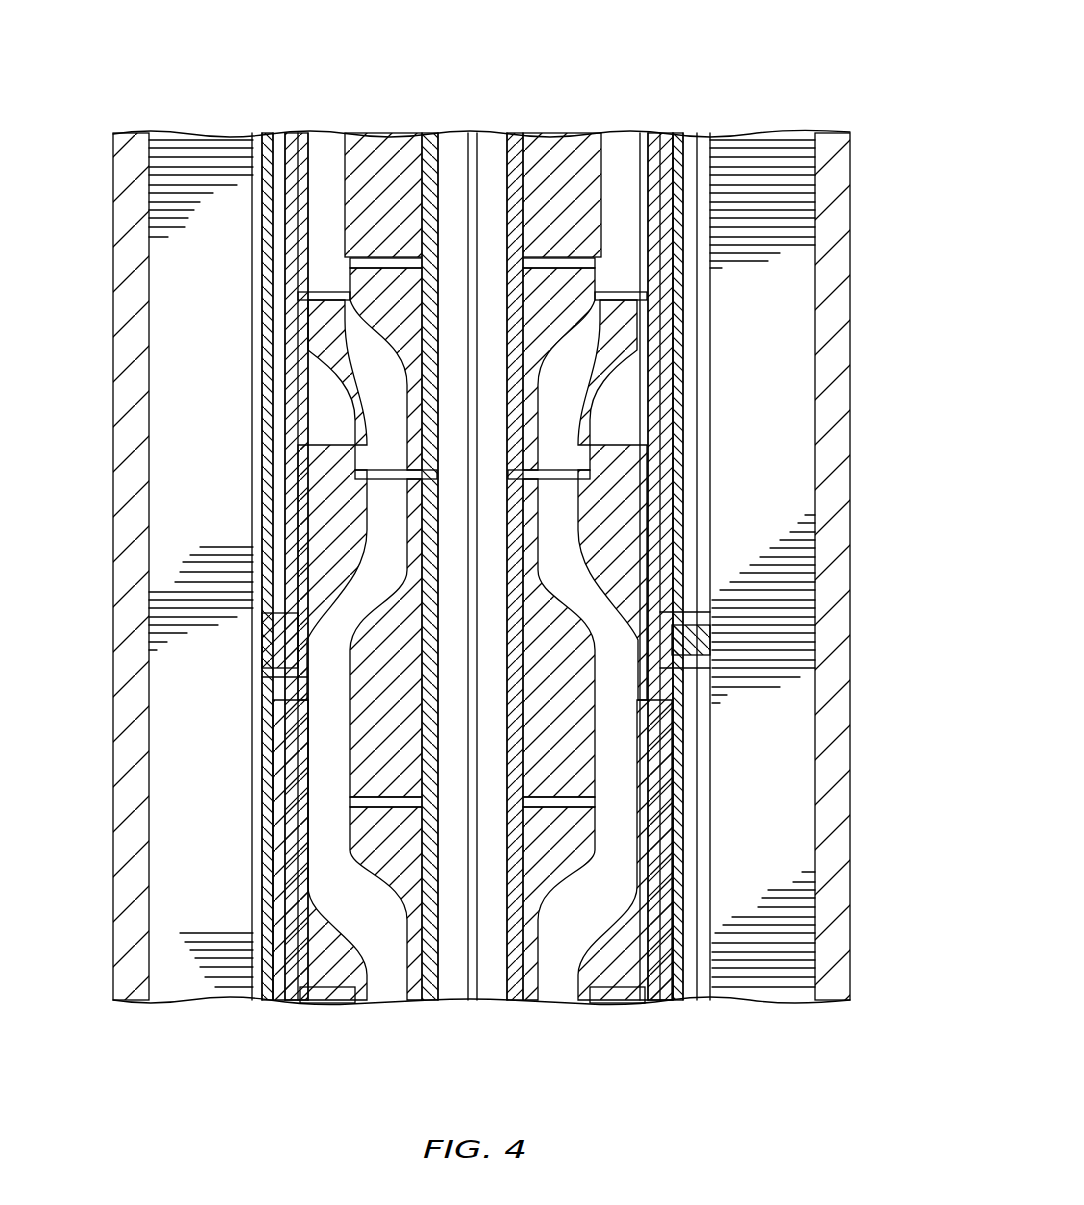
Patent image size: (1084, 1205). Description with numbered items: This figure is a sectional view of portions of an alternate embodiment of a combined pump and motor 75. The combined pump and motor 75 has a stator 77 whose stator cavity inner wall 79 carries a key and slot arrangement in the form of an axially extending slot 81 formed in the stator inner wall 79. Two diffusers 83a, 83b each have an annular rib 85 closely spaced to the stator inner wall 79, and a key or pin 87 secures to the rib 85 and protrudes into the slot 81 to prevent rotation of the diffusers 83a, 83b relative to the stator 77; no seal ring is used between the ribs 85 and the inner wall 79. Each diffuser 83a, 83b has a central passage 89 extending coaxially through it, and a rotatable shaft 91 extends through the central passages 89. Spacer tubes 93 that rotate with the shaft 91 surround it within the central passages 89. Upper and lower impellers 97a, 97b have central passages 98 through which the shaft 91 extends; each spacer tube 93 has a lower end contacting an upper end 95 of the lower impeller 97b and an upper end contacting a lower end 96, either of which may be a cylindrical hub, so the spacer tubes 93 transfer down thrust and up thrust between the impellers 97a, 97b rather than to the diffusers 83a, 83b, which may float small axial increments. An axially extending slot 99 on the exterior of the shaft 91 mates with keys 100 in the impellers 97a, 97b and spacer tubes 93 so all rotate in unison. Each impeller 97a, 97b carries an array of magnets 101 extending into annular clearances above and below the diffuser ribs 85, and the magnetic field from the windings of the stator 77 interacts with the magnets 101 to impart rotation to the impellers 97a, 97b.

The combined pump and motor 75 is at (876, 202).
The stator 77 is at (800, 282).
The stator cavity inner wall 79 is at (272, 370).
The axially extending slot 81 is at (706, 348).
The diffuser 83a is at (578, 190).
The diffuser 83b is at (640, 486).
The annular rib 85 is at (262, 640).
The key or pin 87 is at (692, 636).
The central passage 89 is at (432, 200).
The rotatable shaft 91 is at (458, 148).
The spacer tube 93 is at (530, 134).
The upper end 95 is at (520, 250).
The lower end 96 is at (430, 486).
The upper impeller 97a is at (302, 426).
The lower impeller 97b is at (300, 906).
The central passage 98 is at (455, 398).
The axially extending slot 99 is at (492, 722).
The mating key 100 is at (465, 882).
The magnet 101 is at (667, 858).